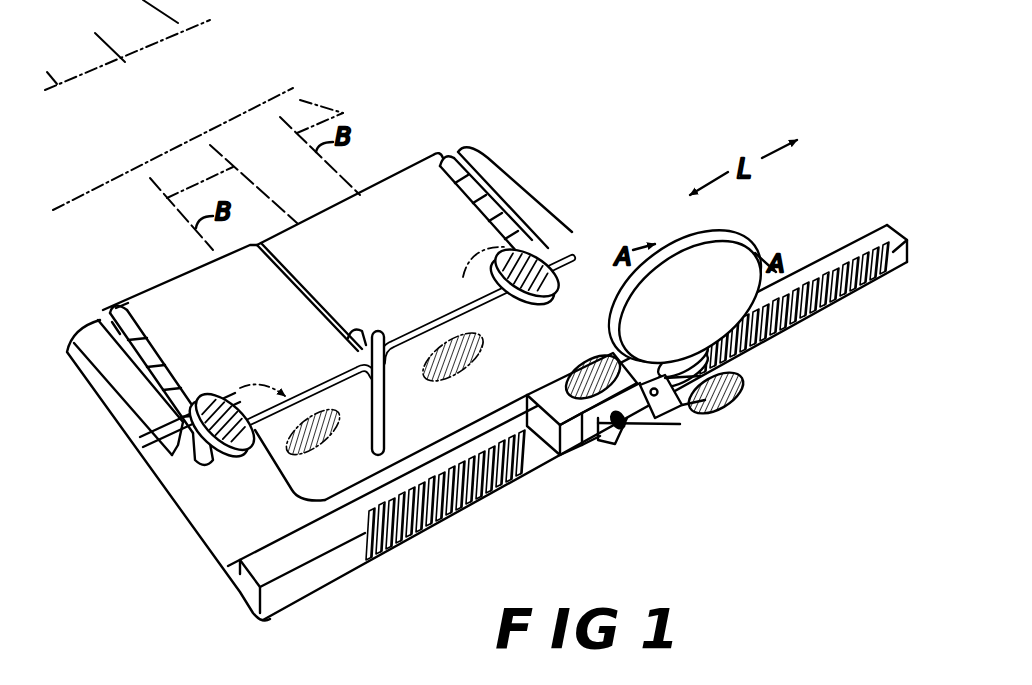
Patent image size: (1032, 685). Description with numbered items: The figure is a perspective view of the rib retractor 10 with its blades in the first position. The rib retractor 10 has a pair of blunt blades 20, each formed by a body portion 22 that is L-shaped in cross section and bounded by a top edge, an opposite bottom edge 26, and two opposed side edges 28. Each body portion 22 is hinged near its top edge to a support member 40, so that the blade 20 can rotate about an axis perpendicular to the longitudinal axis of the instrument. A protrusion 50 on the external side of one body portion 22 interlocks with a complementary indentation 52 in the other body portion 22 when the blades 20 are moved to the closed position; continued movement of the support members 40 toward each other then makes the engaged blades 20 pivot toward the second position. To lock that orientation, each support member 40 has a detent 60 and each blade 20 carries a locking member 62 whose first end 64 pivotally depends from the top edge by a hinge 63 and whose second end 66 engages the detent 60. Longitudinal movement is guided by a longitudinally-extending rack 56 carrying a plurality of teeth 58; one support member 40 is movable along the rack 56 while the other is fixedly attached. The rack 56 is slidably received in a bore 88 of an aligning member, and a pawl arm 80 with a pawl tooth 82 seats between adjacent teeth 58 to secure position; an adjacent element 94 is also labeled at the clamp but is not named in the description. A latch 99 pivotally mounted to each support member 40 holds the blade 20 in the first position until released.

The rib retractor 10 is at (474, 90).
The blunt blade 20 is at (252, 389).
The body portion 22 is at (394, 281).
The bottom edge 26 is at (384, 452).
The side edge 28 is at (388, 404).
The support member 40 is at (336, 383).
The protrusion 50 is at (348, 338).
The indentation 52 is at (376, 333).
The rack 56 is at (567, 410).
The teeth 58 is at (820, 307).
The detent 60 is at (190, 467).
The locking member 62 is at (110, 352).
The hinge 63 is at (190, 462).
The first end 64 is at (124, 306).
The second end 66 is at (100, 398).
The pawl arm 80 is at (674, 431).
The pawl tooth 82 is at (600, 448).
The bore 88 is at (580, 457).
The slot 94 is at (590, 455).
The latch 99 is at (205, 396).